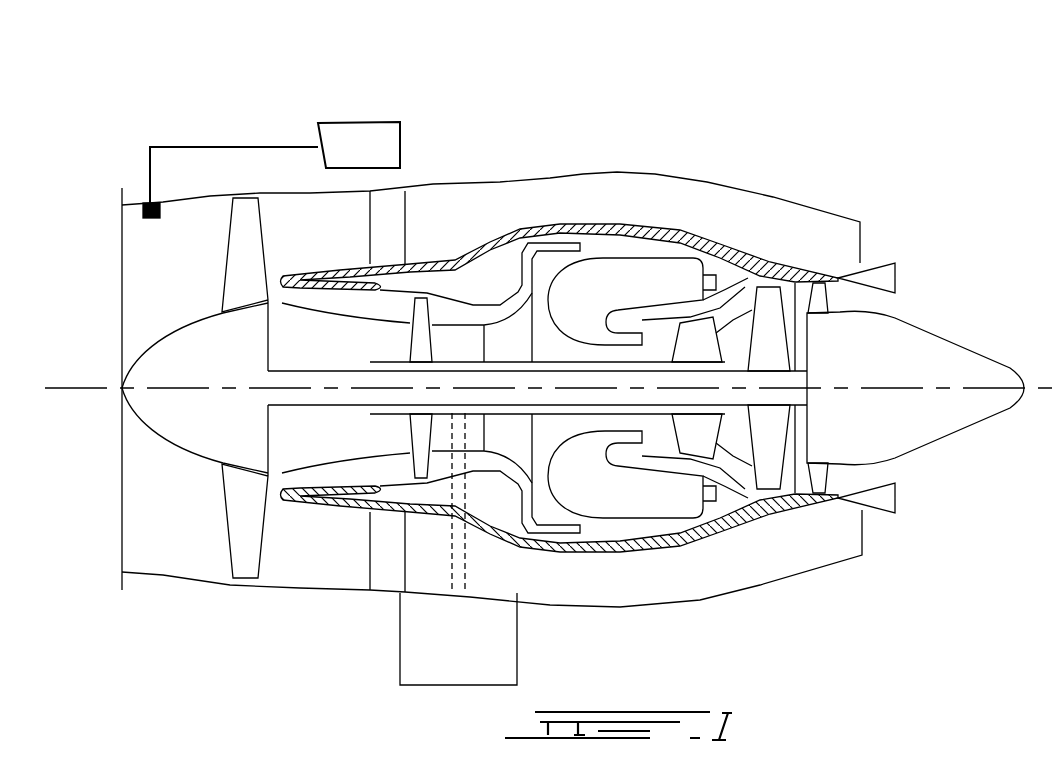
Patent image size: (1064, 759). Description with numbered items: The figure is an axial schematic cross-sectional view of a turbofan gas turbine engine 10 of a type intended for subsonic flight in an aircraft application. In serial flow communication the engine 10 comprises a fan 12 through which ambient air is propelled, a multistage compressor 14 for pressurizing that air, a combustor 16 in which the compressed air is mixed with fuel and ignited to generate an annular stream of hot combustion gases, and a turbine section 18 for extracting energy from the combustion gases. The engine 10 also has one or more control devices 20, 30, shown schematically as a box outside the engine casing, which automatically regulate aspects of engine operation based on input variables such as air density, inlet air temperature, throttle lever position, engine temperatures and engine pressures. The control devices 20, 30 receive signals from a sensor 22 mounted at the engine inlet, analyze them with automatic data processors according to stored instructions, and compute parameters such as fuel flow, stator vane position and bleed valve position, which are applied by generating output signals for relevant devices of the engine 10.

The gas turbine engine 10 is at (750, 132).
The fan 12 is at (243, 513).
The multistage compressor 14 is at (468, 317).
The combustor 16 is at (627, 277).
The turbine section 18 is at (735, 440).
The control device 20 is at (360, 122).
The control device 30 is at (359, 145).
The sensor 22 is at (143, 218).